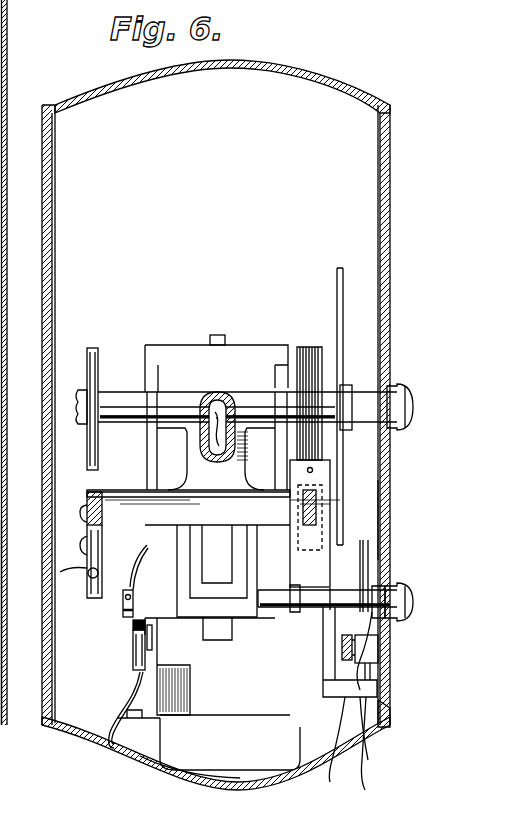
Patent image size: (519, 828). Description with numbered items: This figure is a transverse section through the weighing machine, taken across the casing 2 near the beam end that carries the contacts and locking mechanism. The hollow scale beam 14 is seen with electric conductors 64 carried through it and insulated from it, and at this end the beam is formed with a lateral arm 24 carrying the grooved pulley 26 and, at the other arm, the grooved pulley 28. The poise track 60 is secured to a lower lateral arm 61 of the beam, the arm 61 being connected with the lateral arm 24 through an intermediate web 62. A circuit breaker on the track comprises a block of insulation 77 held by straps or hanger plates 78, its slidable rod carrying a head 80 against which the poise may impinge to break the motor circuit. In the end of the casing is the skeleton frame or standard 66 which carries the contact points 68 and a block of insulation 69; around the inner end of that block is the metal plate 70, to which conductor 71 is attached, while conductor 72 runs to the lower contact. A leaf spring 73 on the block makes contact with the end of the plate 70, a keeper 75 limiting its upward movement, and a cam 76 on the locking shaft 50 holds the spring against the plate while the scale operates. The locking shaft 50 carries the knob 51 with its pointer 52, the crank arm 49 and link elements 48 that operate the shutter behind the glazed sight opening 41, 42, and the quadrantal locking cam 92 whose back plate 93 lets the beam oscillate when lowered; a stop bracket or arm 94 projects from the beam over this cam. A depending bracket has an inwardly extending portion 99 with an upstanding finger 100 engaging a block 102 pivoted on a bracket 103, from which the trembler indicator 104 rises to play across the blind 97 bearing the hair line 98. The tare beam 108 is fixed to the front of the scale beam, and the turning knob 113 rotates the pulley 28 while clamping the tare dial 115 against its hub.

The casing 2 is at (135, 785).
The beam 14 is at (198, 396).
The lateral arm 24 is at (115, 392).
The grooved pulley 26 is at (87, 362).
The grooved pulley 28 is at (320, 348).
The sight opening 41 is at (7, 252).
The glazing 42 is at (7, 290).
The link element 48 is at (378, 660).
The crank arm 49 is at (396, 585).
The locking shaft 50 is at (300, 612).
The knob 51 is at (380, 586).
The pointer 52 is at (378, 640).
The track 60 is at (90, 496).
The lower lateral arm 61 is at (126, 497).
The intermediate web 62 is at (186, 472).
The electric conductor 64 is at (222, 394).
The frame or standard 66 is at (236, 730).
The contact point 68 is at (216, 335).
The block of insulation 69 is at (135, 652).
The metal plate 70 is at (157, 652).
The conductor 71 is at (112, 720).
The conductor 72 is at (87, 560).
The leaf spring 73 is at (133, 630).
The keeper 75 is at (152, 636).
The cam 76 is at (123, 614).
The block of insulation 77 is at (88, 590).
The strap or hanger plate 78 is at (105, 526).
The head 80 is at (60, 572).
The locking cam 92 is at (147, 548).
The back plate 93 is at (238, 617).
The stop bracket or arm 94 is at (222, 535).
The blind or screen 97 is at (364, 540).
The hair line 98 is at (320, 678).
The inwardly extending portion 99 is at (366, 790).
The upstanding finger 100 is at (382, 692).
The block 102 is at (368, 760).
The bracket 103 is at (331, 782).
The trembler finger or indicator 104 is at (378, 500).
The tare beam 108 is at (303, 500).
The turning knob 113 is at (395, 388).
The tare dial 115 is at (340, 268).